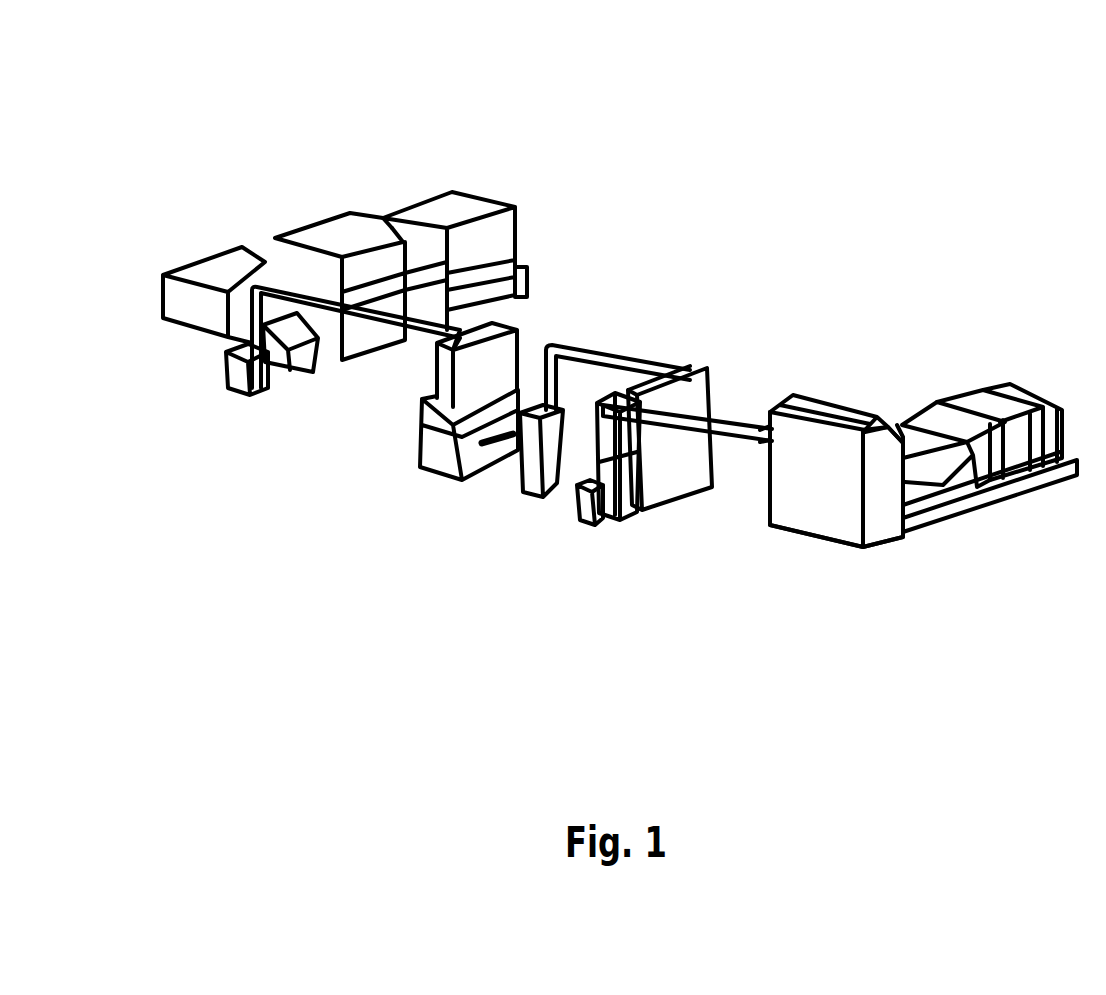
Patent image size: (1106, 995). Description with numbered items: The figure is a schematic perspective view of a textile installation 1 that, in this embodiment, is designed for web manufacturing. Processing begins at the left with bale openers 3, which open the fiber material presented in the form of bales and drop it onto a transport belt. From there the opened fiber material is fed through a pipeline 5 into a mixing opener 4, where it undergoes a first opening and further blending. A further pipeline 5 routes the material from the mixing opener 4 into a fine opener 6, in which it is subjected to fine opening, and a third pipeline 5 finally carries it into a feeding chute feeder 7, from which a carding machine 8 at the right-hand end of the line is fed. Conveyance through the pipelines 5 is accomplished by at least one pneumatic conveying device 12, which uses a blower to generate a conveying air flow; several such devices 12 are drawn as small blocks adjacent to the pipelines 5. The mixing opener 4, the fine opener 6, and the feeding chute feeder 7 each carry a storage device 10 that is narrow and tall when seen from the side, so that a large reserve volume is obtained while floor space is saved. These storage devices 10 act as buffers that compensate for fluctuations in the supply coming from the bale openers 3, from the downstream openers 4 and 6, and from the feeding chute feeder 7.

The textile installation 1 is at (918, 127).
The bale opener 3 is at (342, 248).
The mixing opener 4 is at (437, 452).
The pipeline 5 is at (377, 320).
The fine opener 6 is at (656, 483).
The feeding chute feeder 7 is at (877, 492).
The carding machine 8 is at (987, 430).
The storage device 10 is at (488, 350).
The pneumatic conveying device 12 is at (240, 372).